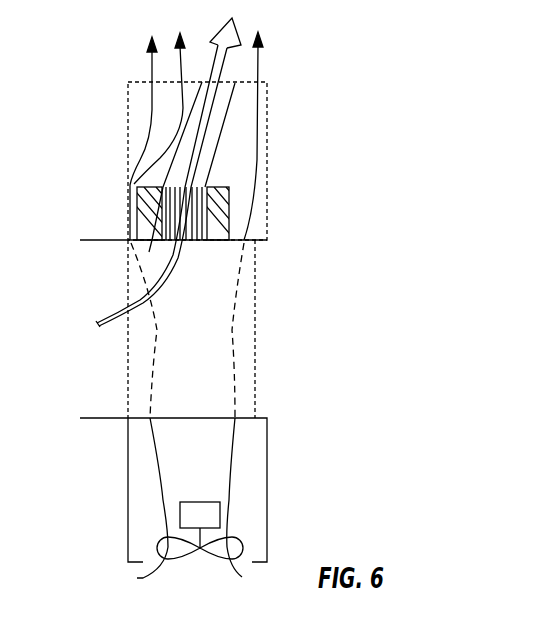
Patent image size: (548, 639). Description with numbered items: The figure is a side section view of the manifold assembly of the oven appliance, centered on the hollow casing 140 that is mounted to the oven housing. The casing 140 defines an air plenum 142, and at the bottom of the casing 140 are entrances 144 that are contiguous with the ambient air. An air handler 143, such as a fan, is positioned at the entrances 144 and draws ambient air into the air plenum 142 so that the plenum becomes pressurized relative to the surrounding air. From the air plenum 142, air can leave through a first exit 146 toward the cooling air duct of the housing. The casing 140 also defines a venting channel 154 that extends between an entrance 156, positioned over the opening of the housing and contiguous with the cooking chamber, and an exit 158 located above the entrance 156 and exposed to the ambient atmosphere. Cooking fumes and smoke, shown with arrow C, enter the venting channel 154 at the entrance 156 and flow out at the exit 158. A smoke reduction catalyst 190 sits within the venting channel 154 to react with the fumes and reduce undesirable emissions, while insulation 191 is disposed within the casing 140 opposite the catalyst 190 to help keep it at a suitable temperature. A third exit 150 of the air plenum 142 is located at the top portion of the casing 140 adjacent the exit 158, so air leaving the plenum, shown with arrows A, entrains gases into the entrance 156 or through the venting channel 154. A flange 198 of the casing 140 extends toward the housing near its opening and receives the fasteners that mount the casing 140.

The casing 140 is at (267, 185).
The air plenum 142 is at (270, 240).
The air handler 143 is at (250, 546).
The entrances 144 is at (196, 568).
The first exit 146 is at (122, 500).
The third exit 150 is at (144, 90).
The venting channel 154 is at (215, 130).
The entrance 156 is at (156, 252).
The exit 158 is at (203, 70).
The smoke reduction catalyst 190 is at (193, 243).
The insulation 191 is at (135, 195).
The flange 198 is at (103, 240).
The arrow C is at (112, 312).
The arrows A is at (148, 73).